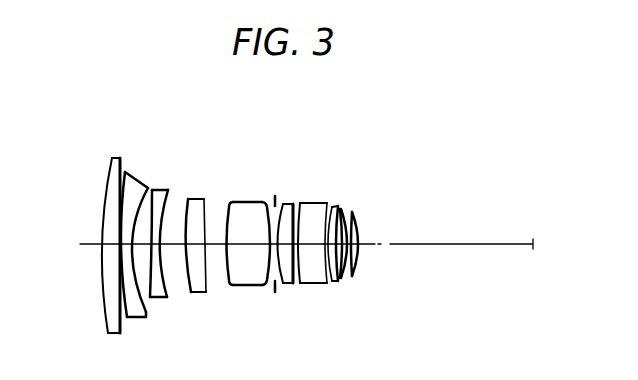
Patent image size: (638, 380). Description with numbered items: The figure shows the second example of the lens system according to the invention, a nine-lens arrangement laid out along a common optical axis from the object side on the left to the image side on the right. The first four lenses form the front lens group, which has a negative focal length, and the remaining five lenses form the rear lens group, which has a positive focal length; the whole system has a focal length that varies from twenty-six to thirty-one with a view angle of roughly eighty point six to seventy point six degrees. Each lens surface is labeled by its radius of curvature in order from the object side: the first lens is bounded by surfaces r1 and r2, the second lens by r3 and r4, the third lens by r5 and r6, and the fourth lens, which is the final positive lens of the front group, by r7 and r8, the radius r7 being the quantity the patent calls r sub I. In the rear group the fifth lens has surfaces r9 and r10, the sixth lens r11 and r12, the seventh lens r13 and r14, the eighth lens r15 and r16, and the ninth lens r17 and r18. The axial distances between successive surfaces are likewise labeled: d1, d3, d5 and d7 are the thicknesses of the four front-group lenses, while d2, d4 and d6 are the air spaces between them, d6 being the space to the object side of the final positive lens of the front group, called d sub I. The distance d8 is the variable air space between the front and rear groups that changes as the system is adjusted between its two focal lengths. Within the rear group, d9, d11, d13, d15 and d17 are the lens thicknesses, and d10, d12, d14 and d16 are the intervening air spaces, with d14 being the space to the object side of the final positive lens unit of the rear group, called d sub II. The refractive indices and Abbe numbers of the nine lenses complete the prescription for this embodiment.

The radius of curvature of the first lens surface r1 is at (107, 180).
The radius of curvature of the second lens surface r2 is at (116, 161).
The radius of curvature of the third lens surface r3 is at (125, 171).
The radius of curvature of the fourth lens surface r4 is at (146, 187).
The radius of curvature of the fifth lens surface r5 is at (153, 189).
The radius of curvature of the sixth lens surface r6 is at (167, 189).
The radius of curvature of the seventh lens surface r7 is at (190, 198).
The radius of curvature of the eighth lens surface r8 is at (204, 198).
The radius of curvature of the ninth lens surface r9 is at (232, 201).
The radius of curvature of the tenth lens surface r10 is at (260, 201).
The radius of curvature of the eleventh lens surface r11 is at (281, 203).
The radius of curvature of the twelfth lens surface r12 is at (289, 203).
The radius of curvature of the thirteenth lens surface r13 is at (300, 202).
The radius of curvature of the fourteenth lens surface r14 is at (325, 202).
The radius of curvature of the fifteenth lens surface r15 is at (333, 206).
The radius of curvature of the sixteenth lens surface r16 is at (341, 207).
The radius of curvature of the seventeenth lens surface r17 is at (350, 210).
The radius of curvature of the eighteenth lens surface r18 is at (357, 213).
The axial distance between the first and second surfaces d1 is at (107, 252).
The axial distance between the second and third surfaces d2 is at (120, 249).
The axial distance between the third and fourth surfaces d3 is at (121, 254).
The axial distance between the fourth and fifth surfaces d4 is at (136, 305).
The axial distance between the fifth and sixth surfaces d5 is at (161, 252).
The axial distance between the sixth and seventh surfaces d6 is at (178, 252).
The axial distance between the seventh and eighth surfaces d7 is at (203, 252).
The axial distance between the eighth and ninth surfaces d8 is at (225, 254).
The axial distance between the ninth and tenth surfaces d9 is at (234, 241).
The axial distance between the tenth and eleventh surfaces d10 is at (236, 247).
The axial distance between the eleventh and twelfth surfaces d11 is at (288, 252).
The axial distance between the twelfth and thirteenth surfaces d12 is at (307, 252).
The axial distance between the thirteenth and fourteenth surfaces d13 is at (324, 252).
The axial distance between the fourteenth and fifteenth surfaces d14 is at (332, 260).
The axial distance between the fifteenth and sixteenth surfaces d15 is at (347, 260).
The axial distance between the sixteenth and seventeenth surfaces d16 is at (355, 256).
The axial distance between the seventeenth and eighteenth surfaces d17 is at (360, 248).